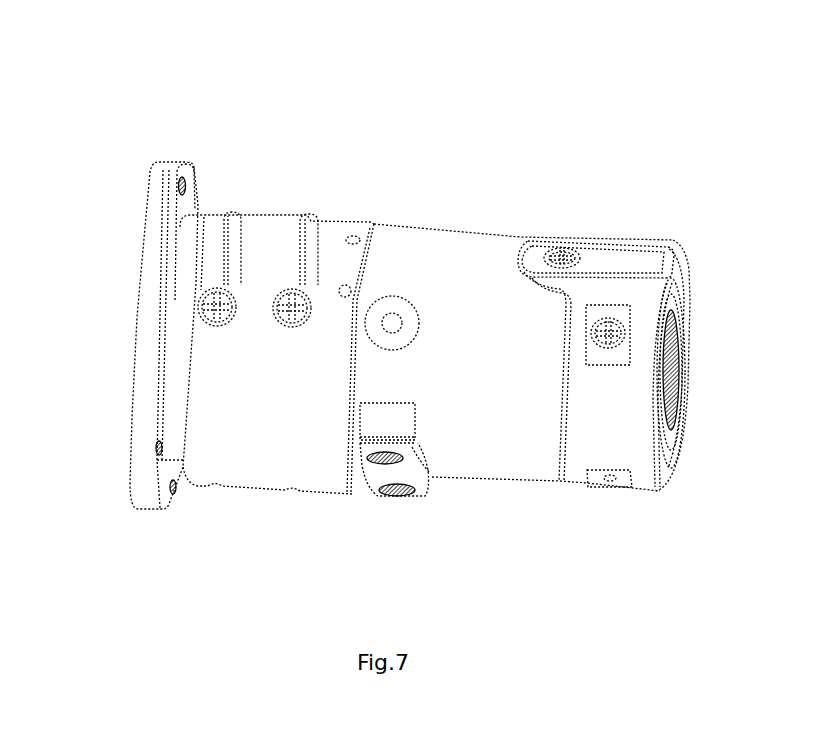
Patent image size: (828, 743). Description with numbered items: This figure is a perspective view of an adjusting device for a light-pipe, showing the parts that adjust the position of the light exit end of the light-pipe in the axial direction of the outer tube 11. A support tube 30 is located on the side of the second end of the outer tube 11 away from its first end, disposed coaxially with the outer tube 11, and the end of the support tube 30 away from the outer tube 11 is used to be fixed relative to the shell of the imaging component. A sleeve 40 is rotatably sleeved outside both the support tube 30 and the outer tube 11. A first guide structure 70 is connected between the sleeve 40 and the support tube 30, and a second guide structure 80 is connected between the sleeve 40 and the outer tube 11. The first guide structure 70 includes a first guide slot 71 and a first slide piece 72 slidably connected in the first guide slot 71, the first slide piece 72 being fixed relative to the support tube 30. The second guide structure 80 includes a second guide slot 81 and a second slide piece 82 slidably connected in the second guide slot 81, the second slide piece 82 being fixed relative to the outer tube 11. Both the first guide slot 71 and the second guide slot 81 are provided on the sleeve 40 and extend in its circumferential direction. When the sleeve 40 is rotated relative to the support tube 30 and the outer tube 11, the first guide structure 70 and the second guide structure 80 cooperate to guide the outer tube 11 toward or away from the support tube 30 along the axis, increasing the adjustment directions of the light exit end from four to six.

The outer tube 11 is at (495, 430).
The support tube 30 is at (177, 313).
The sleeve 40 is at (265, 437).
The first guide structure 70 is at (190, 73).
The first guide slot 71 is at (238, 258).
The first slide piece 72 is at (218, 303).
The second guide structure 80 is at (285, 72).
The second guide slot 81 is at (312, 262).
The second slide piece 82 is at (298, 300).